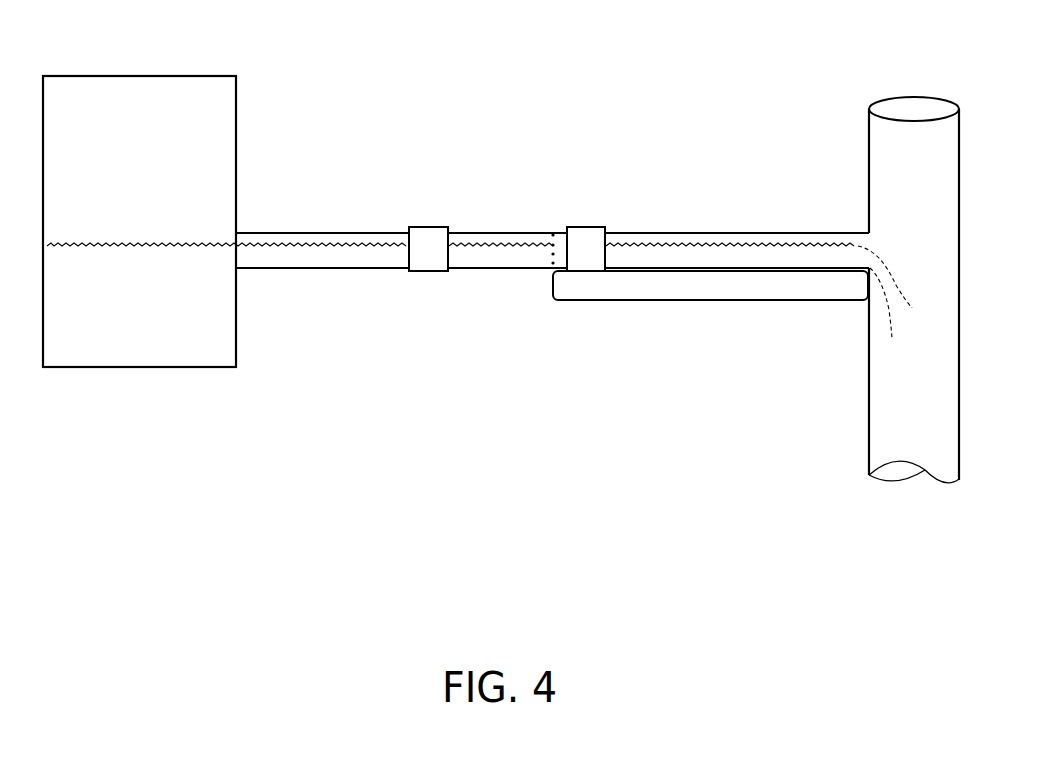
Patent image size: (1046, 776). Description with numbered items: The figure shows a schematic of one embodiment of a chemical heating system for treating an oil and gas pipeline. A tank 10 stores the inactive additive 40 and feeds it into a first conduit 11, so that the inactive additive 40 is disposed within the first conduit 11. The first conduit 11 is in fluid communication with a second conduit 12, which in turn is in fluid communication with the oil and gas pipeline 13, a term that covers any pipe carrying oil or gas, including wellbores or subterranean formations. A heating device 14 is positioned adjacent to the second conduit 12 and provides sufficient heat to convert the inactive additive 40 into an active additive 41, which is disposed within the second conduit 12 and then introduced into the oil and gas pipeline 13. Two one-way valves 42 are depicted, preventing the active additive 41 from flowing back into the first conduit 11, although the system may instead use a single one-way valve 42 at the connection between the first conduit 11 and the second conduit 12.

The tank 10 is at (206, 100).
The first conduit 11 is at (340, 232).
The second conduit 12 is at (620, 232).
The oil and gas pipeline 13 is at (869, 113).
The heating device 14 is at (575, 288).
The inactive additive 40 is at (215, 328).
The active additive 41 is at (705, 255).
The one-way valve 42 is at (411, 226).